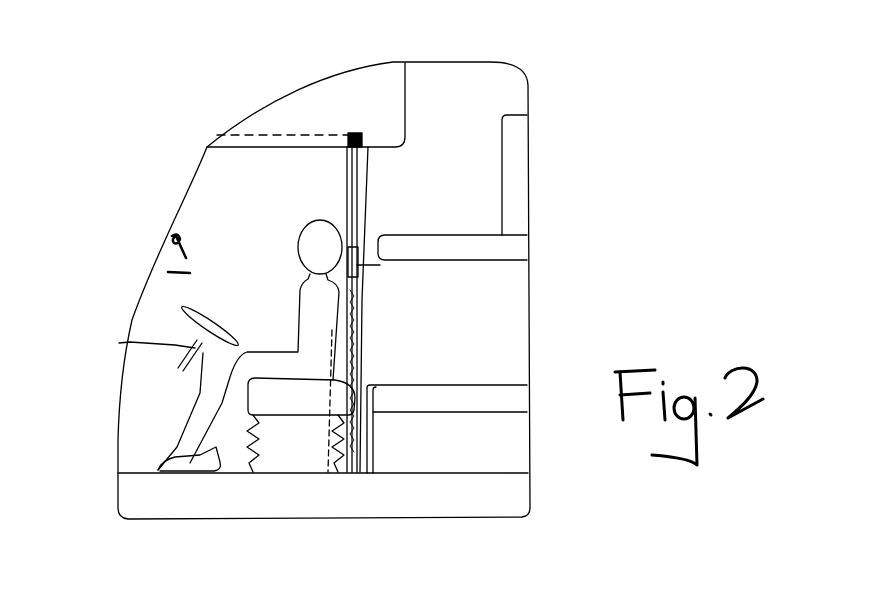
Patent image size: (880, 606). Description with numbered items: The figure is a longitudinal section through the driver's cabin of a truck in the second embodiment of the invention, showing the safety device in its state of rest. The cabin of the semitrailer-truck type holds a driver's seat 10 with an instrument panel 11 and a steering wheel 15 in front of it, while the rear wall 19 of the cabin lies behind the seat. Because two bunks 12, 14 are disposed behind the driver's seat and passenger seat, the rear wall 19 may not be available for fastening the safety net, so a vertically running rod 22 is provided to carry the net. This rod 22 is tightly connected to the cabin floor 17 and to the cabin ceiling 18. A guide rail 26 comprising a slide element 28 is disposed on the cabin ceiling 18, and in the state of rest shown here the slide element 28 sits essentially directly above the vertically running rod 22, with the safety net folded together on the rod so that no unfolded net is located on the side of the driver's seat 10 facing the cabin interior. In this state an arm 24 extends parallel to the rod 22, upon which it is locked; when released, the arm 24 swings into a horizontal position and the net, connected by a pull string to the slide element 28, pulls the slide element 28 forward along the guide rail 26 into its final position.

The driver's seat 10 is at (300, 402).
The instrument panel 11 is at (135, 418).
The bunk 12 is at (502, 400).
The bunk 14 is at (522, 245).
The steering wheel 15 is at (175, 345).
The cabin floor 17 is at (268, 478).
The cabin ceiling 18 is at (289, 137).
The rear wall 19 is at (528, 330).
The vertically running rod 22 is at (367, 203).
The arm 24 is at (366, 262).
The guide rail 26 is at (237, 140).
The slide element 28 is at (357, 138).